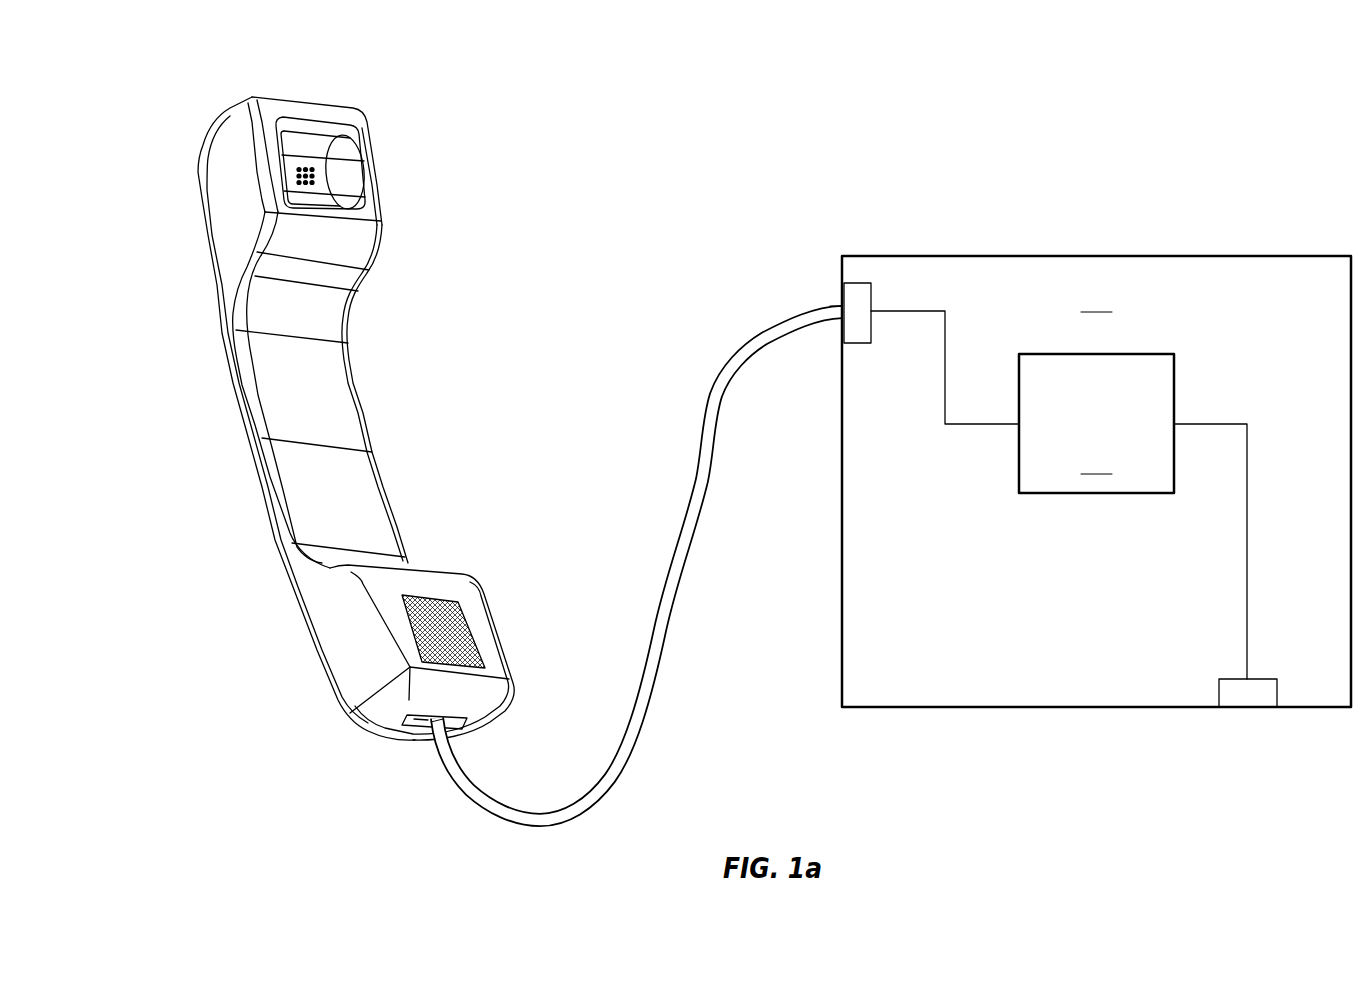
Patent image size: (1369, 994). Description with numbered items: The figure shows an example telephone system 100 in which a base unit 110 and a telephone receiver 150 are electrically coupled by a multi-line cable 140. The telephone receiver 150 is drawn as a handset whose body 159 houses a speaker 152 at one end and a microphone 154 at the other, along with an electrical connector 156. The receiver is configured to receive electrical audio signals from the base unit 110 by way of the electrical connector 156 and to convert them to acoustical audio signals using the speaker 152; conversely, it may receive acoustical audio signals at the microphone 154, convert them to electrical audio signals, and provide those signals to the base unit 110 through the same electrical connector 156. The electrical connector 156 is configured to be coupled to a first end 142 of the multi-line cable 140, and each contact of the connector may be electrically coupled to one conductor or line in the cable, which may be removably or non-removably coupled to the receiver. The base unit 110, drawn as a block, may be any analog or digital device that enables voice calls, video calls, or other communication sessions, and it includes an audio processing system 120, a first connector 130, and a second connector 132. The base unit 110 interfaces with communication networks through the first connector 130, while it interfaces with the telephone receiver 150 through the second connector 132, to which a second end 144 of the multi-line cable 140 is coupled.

The telephone system 100 is at (1283, 124).
The base unit 110 is at (1066, 503).
The audio processing system 120 is at (1096, 423).
The first connector 130 is at (1236, 710).
The second connector 132 is at (853, 346).
The multi-line cable 140 is at (671, 606).
The first end 142 is at (433, 748).
The second end 144 is at (842, 305).
The telephone receiver 150 is at (226, 112).
The speaker 152 is at (350, 178).
The microphone 154 is at (472, 625).
The electrical connector 156 is at (419, 726).
The body 159 is at (370, 412).